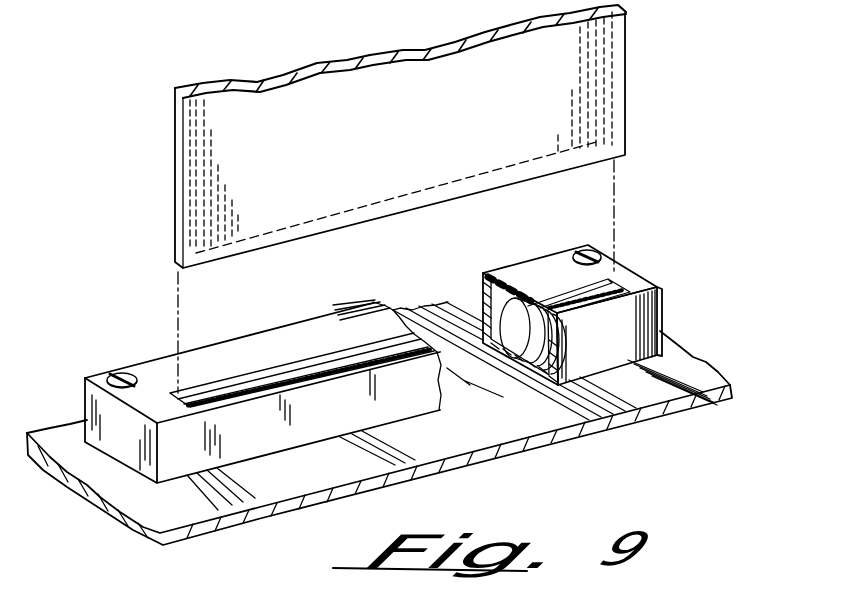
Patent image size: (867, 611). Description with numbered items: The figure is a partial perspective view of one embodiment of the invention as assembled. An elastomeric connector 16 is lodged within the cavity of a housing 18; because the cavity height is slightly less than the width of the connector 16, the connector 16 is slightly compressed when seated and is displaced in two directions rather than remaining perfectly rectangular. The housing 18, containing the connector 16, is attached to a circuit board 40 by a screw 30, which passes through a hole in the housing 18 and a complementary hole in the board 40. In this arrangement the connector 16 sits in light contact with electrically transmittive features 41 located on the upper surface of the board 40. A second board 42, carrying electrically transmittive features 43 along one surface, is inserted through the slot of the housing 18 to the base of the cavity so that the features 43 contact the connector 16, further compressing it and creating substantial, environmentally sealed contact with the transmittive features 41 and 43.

The connector 16 is at (514, 317).
The housing 18 is at (300, 320).
The screw 30 is at (582, 252).
The circuit board 40 is at (673, 410).
The electrically transmittive features 41 is at (670, 372).
The second board 42 is at (422, 199).
The electrically transmittive features 43 is at (583, 65).